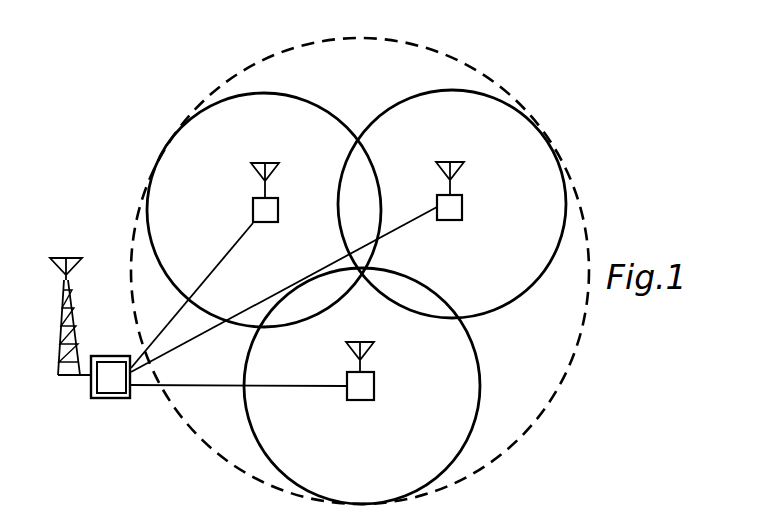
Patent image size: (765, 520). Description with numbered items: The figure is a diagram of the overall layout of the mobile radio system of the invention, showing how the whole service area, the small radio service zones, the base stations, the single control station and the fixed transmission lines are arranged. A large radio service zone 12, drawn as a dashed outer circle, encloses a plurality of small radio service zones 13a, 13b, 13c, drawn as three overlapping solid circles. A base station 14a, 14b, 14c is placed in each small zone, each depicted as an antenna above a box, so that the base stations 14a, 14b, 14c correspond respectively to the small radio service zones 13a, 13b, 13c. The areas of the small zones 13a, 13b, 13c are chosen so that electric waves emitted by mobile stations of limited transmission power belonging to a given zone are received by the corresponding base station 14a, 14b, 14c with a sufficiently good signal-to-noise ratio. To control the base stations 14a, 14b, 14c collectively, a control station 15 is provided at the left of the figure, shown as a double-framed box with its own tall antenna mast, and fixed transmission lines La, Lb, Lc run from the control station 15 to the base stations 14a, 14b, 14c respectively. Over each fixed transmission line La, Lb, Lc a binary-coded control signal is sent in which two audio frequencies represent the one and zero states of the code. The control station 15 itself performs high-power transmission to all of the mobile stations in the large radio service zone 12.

The large radio service zone 12 is at (456, 64).
The small radio service zone 13a is at (327, 107).
The small radio service zone 13b is at (479, 397).
The small radio service zone 13c is at (528, 294).
The base station 14a is at (278, 210).
The base station 14b is at (374, 388).
The base station 14c is at (462, 204).
The control station 15 is at (106, 398).
The fixed transmission line La is at (155, 342).
The fixed transmission line Lb is at (177, 341).
The fixed transmission line Lc is at (190, 388).